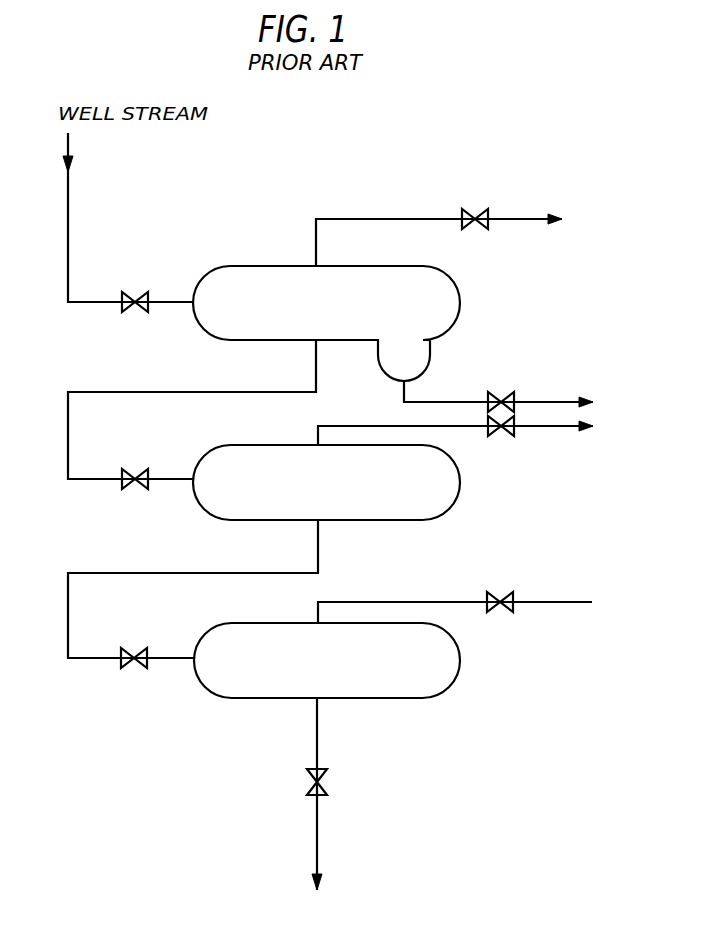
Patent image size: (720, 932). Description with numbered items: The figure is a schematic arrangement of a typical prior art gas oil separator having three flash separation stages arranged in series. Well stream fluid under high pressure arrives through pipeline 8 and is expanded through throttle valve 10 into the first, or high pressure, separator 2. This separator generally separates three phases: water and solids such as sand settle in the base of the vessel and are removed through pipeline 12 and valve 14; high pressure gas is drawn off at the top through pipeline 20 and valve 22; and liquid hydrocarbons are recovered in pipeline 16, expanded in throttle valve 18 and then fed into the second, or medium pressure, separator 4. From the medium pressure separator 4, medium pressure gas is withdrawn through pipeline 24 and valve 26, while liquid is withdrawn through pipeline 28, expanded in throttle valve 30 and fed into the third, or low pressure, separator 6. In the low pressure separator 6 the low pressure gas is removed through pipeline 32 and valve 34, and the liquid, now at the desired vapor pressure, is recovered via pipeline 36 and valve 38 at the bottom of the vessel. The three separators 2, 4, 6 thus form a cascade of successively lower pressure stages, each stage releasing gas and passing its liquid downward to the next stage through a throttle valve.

The high pressure separator 2 is at (326, 323).
The medium pressure separator 4 is at (326, 482).
The low pressure separator 6 is at (327, 660).
The pipeline 8 is at (70, 185).
The throttle valve 10 is at (140, 291).
The pipeline 12 is at (447, 401).
The valve 14 is at (498, 396).
The pipeline 16 is at (67, 432).
The throttle valve 18 is at (140, 488).
The pipeline 20 is at (380, 218).
The valve 22 is at (474, 210).
The pipeline 24 is at (350, 423).
The valve 26 is at (503, 434).
The pipeline 28 is at (67, 612).
The throttle valve 30 is at (139, 668).
The pipeline 32 is at (383, 601).
The valve 34 is at (505, 597).
The pipeline 36 is at (320, 733).
The valve 38 is at (326, 781).